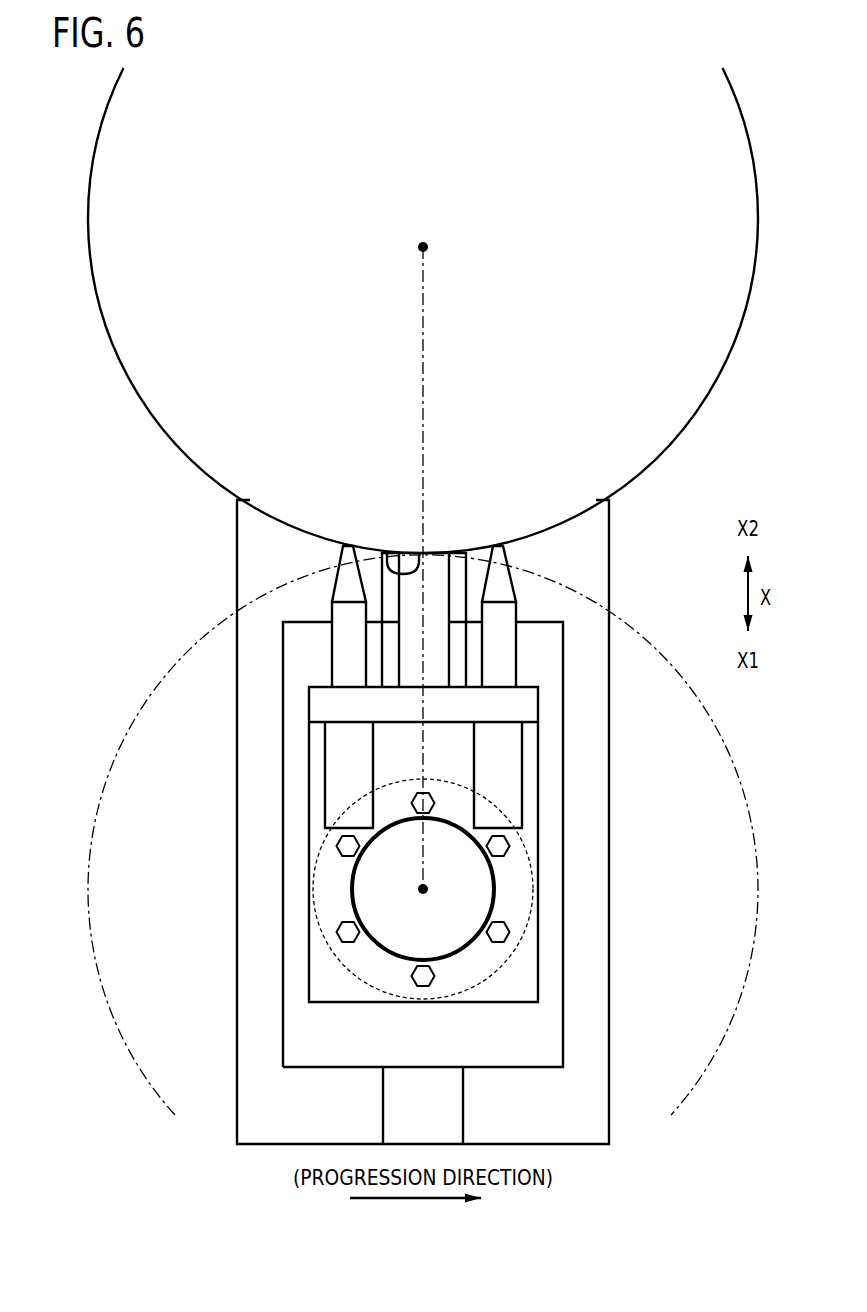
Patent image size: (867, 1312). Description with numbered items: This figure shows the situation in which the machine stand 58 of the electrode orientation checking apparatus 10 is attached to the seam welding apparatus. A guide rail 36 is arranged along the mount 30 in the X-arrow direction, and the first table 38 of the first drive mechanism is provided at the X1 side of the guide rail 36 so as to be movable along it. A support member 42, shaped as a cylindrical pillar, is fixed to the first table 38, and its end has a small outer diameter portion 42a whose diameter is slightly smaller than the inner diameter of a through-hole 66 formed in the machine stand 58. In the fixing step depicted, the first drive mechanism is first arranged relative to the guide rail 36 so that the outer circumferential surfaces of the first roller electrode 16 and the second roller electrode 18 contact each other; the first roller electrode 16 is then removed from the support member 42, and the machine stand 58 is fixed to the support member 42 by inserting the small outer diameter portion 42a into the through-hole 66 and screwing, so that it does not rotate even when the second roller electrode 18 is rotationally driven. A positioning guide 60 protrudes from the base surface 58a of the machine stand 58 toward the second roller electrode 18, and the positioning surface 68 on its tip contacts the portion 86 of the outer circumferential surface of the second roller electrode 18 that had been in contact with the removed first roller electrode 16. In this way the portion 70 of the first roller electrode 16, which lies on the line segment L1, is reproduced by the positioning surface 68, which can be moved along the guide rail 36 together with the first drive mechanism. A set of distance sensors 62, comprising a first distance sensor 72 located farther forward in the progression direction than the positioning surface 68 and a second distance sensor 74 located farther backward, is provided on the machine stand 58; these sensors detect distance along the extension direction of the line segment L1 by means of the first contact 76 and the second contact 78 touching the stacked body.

The electrode orientation checking apparatus 10 is at (628, 755).
The first roller electrode 16 is at (652, 640).
The second roller electrode 18 is at (703, 412).
The mount 30 is at (597, 807).
The guide rail 36 is at (453, 1103).
The first table 38 is at (550, 887).
The support member 42 is at (325, 838).
The small outer diameter portion 42a is at (365, 878).
The machine stand 58 is at (525, 947).
The base surface 58a is at (415, 682).
The positioning guide 60 is at (433, 661).
The distance sensors 62 is at (421, 571).
The through-hole 66 is at (406, 953).
The positioning surface 68 is at (440, 583).
The portion of the outer circumferential surface of the first roller electrode 70 is at (428, 553).
The first distance sensor 72 is at (517, 582).
The second distance sensor 74 is at (330, 582).
The first contact 76 is at (505, 648).
The second contact 78 is at (338, 660).
The portion of the outer circumferential surface of the second roller electrode 86 is at (388, 553).
The line segment L1 is at (424, 300).